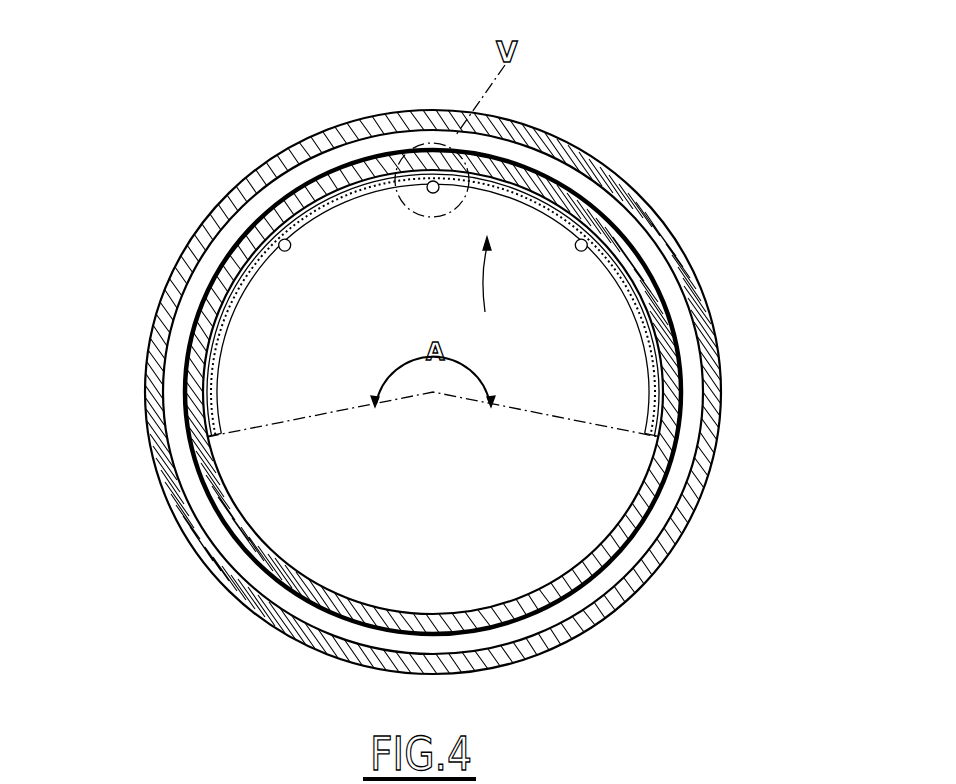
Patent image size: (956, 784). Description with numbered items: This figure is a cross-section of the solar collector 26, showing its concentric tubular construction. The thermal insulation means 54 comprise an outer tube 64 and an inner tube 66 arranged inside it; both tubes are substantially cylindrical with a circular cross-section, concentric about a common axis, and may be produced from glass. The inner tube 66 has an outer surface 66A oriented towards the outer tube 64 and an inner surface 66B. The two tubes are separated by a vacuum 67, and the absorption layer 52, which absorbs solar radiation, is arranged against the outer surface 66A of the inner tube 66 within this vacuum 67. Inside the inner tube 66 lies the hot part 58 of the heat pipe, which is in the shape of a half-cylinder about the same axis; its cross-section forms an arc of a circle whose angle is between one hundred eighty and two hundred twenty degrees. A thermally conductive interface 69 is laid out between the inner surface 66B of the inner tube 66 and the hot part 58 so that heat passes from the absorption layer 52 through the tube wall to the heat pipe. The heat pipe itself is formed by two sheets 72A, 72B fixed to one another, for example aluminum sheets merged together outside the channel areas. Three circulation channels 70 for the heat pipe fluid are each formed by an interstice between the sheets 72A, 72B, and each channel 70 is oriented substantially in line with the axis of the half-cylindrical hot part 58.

The solar collector 26 is at (712, 133).
The absorption layer 52 is at (558, 183).
The thermal insulation means 54 is at (226, 147).
The hot part 58 is at (492, 287).
The outer tube 64 is at (293, 157).
The inner tube 66 is at (262, 218).
The outer surface 66A is at (640, 527).
The inner surface 66B is at (582, 562).
The vacuum 67 is at (227, 243).
The thermally conductive interface 69 is at (605, 245).
The circulation channels 70 is at (576, 250).
The first sheet 72A is at (641, 327).
The second sheet 72B is at (642, 350).